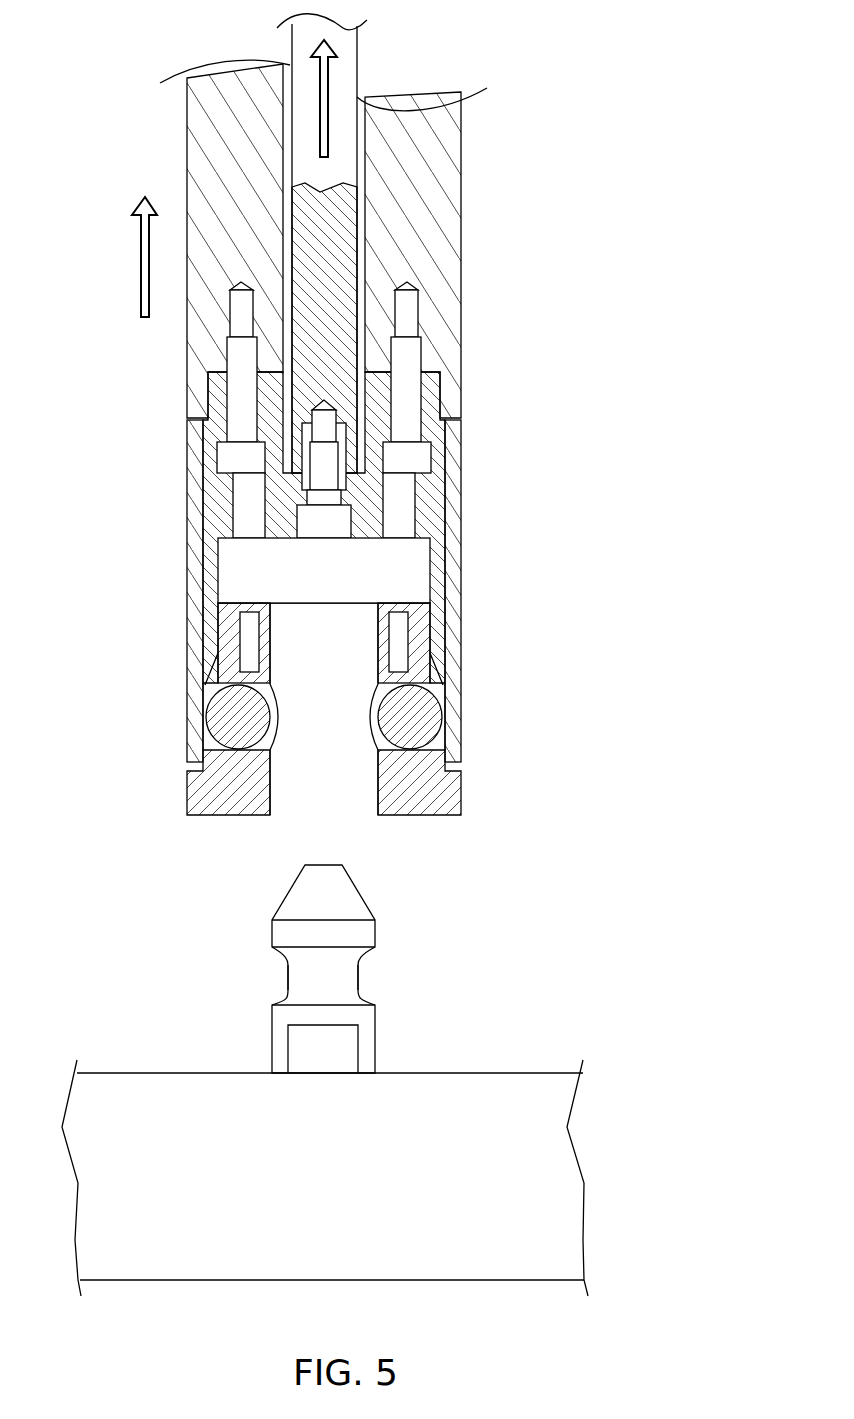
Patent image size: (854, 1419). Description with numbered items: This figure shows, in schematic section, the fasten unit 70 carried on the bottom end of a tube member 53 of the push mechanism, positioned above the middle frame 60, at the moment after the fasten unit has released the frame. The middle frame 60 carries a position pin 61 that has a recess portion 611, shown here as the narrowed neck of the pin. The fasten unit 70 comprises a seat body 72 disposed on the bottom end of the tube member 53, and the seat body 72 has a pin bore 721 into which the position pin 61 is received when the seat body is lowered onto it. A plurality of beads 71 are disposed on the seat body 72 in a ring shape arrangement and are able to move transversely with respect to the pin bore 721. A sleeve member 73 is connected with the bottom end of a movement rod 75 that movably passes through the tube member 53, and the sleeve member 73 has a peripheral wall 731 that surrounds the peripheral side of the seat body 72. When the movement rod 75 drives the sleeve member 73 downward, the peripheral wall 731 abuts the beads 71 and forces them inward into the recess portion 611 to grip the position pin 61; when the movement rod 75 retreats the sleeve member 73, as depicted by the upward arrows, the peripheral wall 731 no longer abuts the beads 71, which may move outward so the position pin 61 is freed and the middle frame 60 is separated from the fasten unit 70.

The tube member 53 is at (428, 247).
The movement rod 75 is at (338, 78).
The fasten unit 70 is at (480, 563).
The sleeve member 73 is at (217, 513).
The peripheral wall 731 is at (213, 630).
The pin bore 721 is at (318, 640).
The bead 71 is at (420, 722).
The seat body 72 is at (435, 795).
The position pin 61 is at (368, 1042).
The recess portion 611 is at (288, 977).
The middle frame 60 is at (508, 1120).